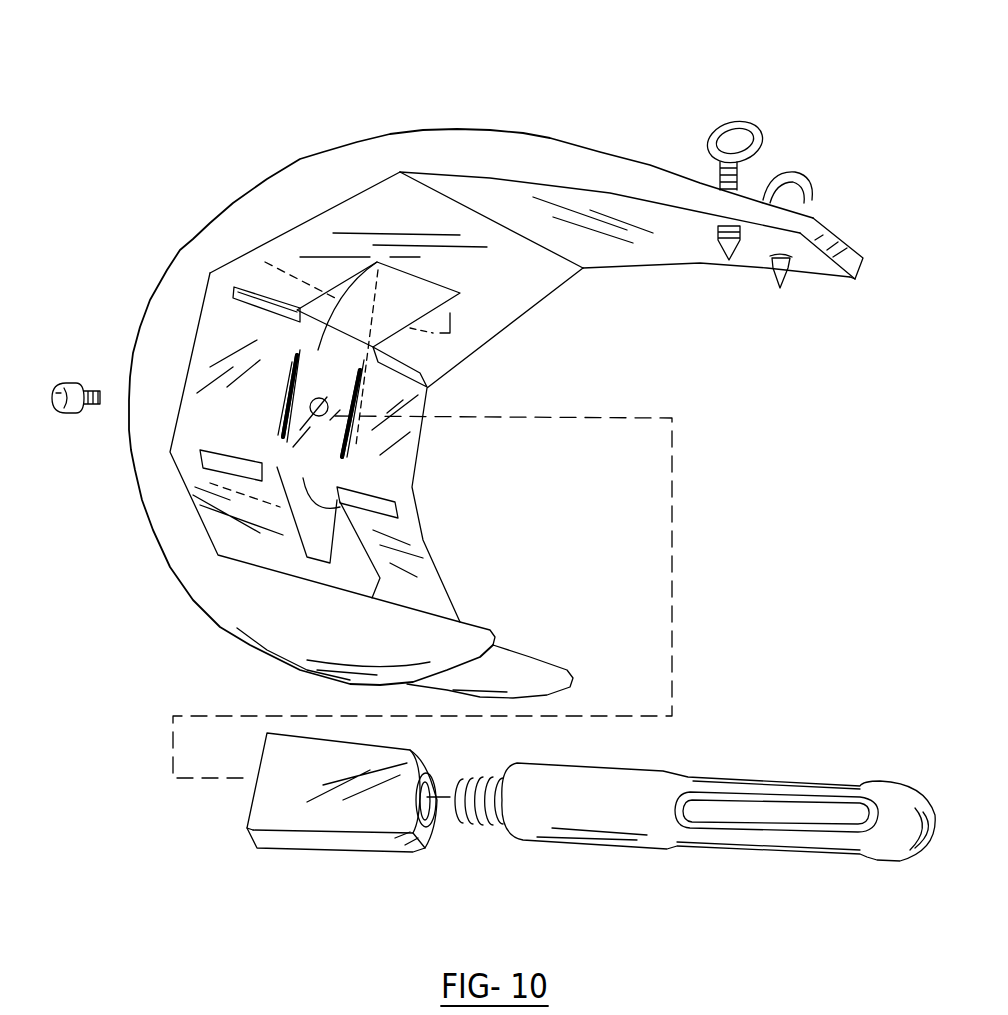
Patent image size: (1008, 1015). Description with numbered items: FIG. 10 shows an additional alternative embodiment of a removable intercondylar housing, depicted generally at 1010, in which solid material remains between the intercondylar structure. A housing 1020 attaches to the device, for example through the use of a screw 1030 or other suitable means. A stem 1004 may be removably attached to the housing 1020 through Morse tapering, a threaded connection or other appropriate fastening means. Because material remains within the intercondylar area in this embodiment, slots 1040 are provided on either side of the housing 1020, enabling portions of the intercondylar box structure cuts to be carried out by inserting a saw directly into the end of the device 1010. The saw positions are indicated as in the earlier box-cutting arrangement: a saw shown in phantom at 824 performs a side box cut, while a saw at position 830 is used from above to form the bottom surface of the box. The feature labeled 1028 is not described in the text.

The removable intercondylar housing embodiment 1010 is at (350, 123).
The screw 1030 is at (123, 397).
The slots 1040 is at (278, 412).
The saw position 830 is at (443, 320).
The hole 1028 is at (329, 407).
The saw position (phantom) for side box cut 824 is at (418, 540).
The housing 1020 is at (363, 840).
The stem 1004 is at (653, 838).